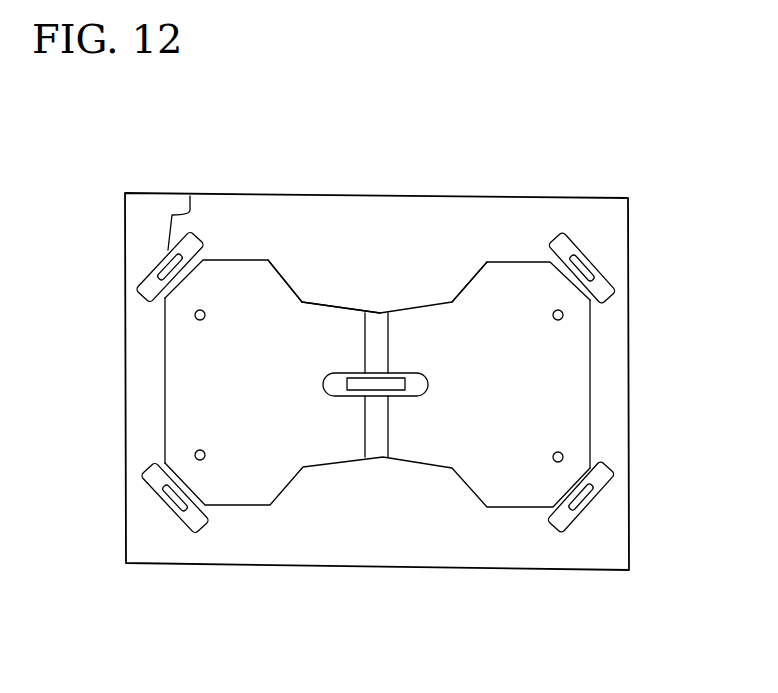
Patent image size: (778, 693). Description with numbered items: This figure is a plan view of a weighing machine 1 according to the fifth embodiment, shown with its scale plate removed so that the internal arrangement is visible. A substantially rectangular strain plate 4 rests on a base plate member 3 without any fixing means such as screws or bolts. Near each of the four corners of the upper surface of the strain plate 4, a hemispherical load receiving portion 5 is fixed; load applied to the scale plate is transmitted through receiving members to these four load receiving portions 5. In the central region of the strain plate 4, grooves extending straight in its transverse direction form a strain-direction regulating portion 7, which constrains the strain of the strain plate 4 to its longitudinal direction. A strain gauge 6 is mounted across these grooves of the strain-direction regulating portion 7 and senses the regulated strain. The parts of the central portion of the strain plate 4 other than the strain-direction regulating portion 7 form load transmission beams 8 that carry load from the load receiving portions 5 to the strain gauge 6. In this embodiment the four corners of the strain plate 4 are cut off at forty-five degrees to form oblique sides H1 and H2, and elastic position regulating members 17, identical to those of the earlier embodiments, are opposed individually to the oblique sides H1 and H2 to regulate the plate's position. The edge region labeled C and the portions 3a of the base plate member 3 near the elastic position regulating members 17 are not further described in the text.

The weighing machine 1 is at (352, 188).
The base plate member 3 is at (500, 222).
The tab portion 3a is at (190, 196).
The strain plate 4 is at (333, 302).
The load receiving portions 5 is at (205, 317).
The strain gauge 6 is at (352, 388).
The strain-direction regulating portion 7 is at (385, 457).
The load transmission beams 8 is at (272, 353).
The elastic position regulating members 17 is at (147, 283).
The oblique side H1 is at (600, 287).
The oblique side H2 is at (148, 296).
The edge C is at (167, 380).